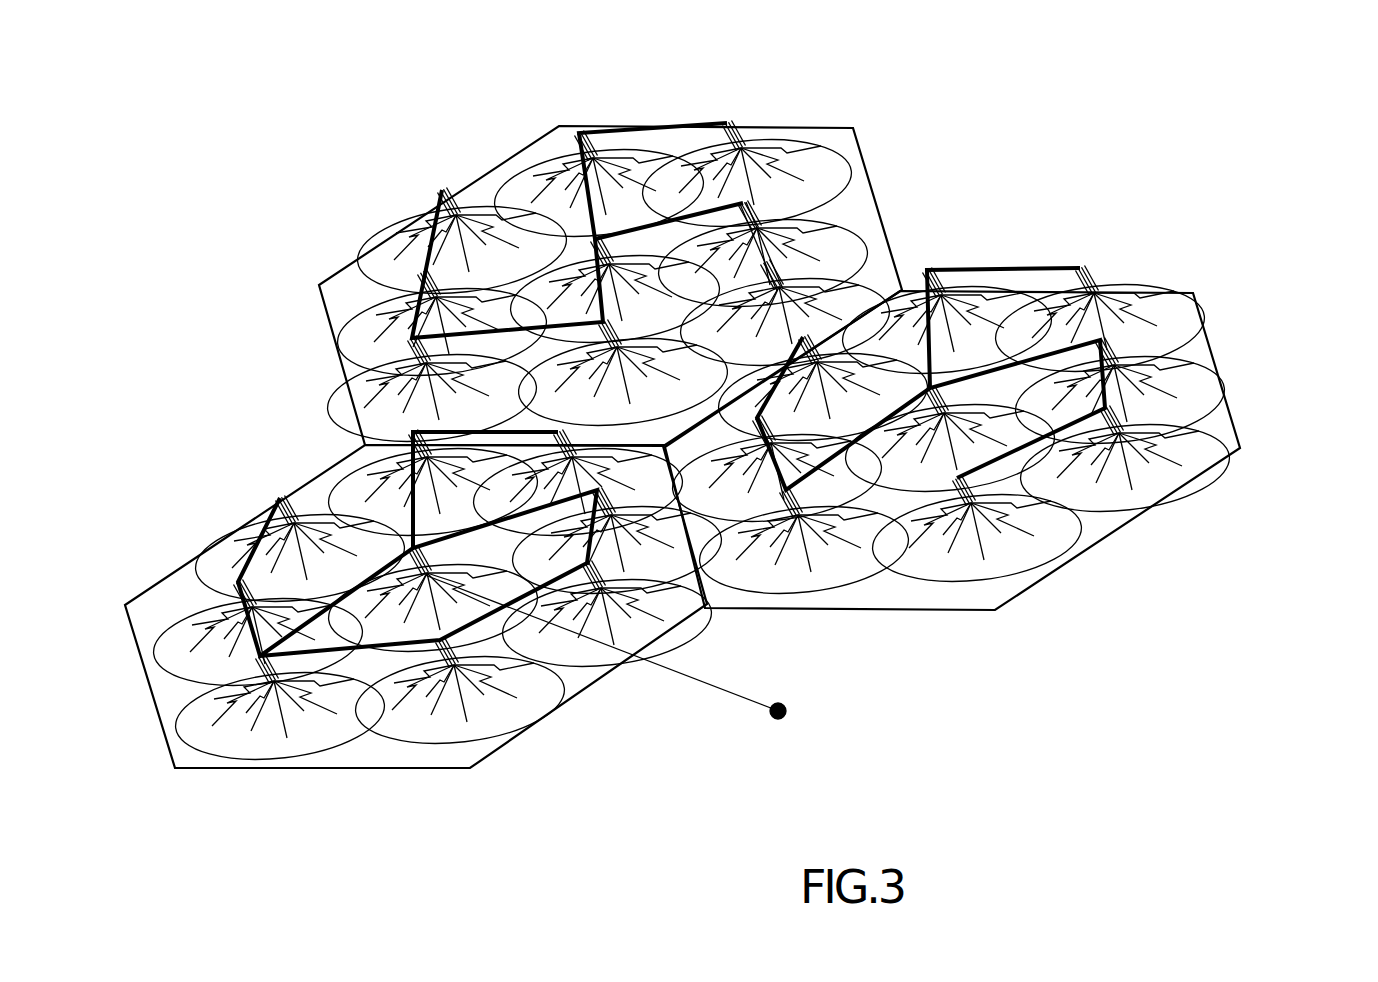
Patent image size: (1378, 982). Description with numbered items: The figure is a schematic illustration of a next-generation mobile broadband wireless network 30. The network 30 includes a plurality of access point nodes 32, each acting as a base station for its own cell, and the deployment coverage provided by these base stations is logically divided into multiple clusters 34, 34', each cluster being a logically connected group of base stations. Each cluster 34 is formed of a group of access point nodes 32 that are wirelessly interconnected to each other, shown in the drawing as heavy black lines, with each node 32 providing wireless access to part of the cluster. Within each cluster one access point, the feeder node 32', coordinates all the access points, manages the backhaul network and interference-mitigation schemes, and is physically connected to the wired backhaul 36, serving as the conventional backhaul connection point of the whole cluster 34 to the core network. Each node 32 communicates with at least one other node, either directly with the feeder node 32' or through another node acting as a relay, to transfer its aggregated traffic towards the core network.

The wireless network 30 is at (1025, 72).
The access point node 32 is at (1050, 379).
The feeder node 32' is at (599, 534).
The cluster 34 is at (952, 440).
The cluster 34' is at (513, 482).
The wired backhaul 36 is at (703, 680).